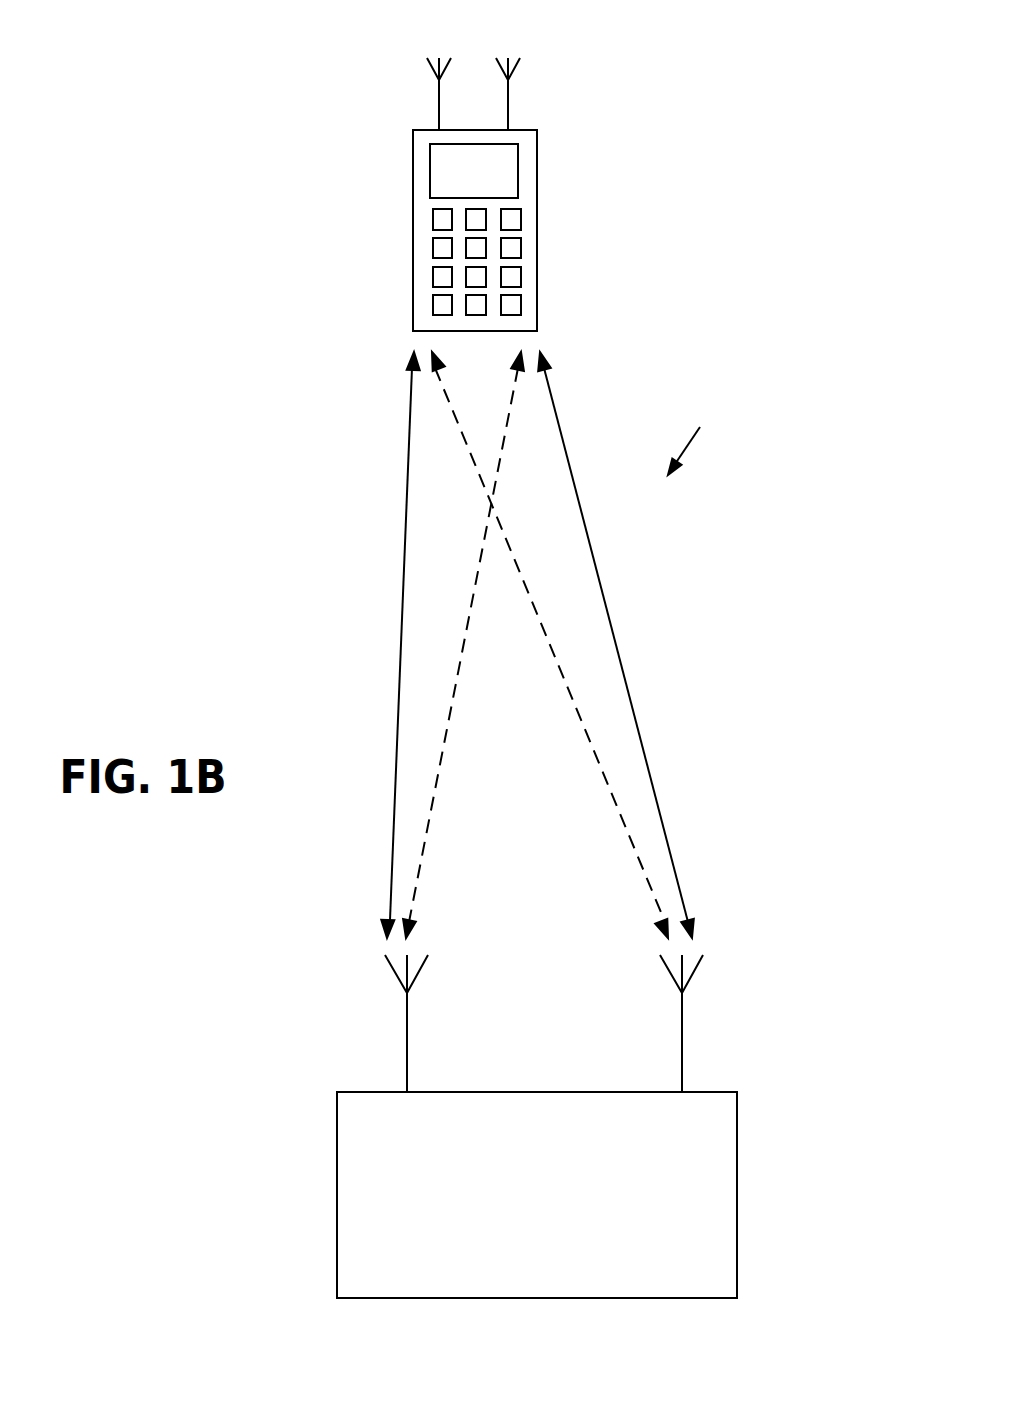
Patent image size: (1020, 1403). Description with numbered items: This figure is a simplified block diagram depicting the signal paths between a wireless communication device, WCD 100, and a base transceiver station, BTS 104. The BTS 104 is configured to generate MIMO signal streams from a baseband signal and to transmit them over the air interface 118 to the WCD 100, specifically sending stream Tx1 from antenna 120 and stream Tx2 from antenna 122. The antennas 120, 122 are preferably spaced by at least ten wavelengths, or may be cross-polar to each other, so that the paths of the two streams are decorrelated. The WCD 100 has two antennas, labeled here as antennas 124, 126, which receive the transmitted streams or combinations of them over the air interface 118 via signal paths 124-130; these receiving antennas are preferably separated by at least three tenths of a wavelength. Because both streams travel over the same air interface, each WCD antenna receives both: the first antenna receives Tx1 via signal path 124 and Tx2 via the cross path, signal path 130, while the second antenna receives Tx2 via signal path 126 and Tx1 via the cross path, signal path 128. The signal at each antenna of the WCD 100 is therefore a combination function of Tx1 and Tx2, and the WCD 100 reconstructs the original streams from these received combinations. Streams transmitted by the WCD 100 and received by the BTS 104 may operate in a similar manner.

The wireless communication device (WCD) 100 is at (413, 213).
The base transceiver station (BTS) 104 is at (737, 1193).
The air interface 118 is at (708, 442).
The antenna 120 is at (406, 1039).
The antenna 122 is at (682, 1052).
The signal path 124 is at (433, 98).
The signal path 126 is at (510, 100).
The signal path 128 is at (442, 747).
The signal path 130 is at (587, 732).